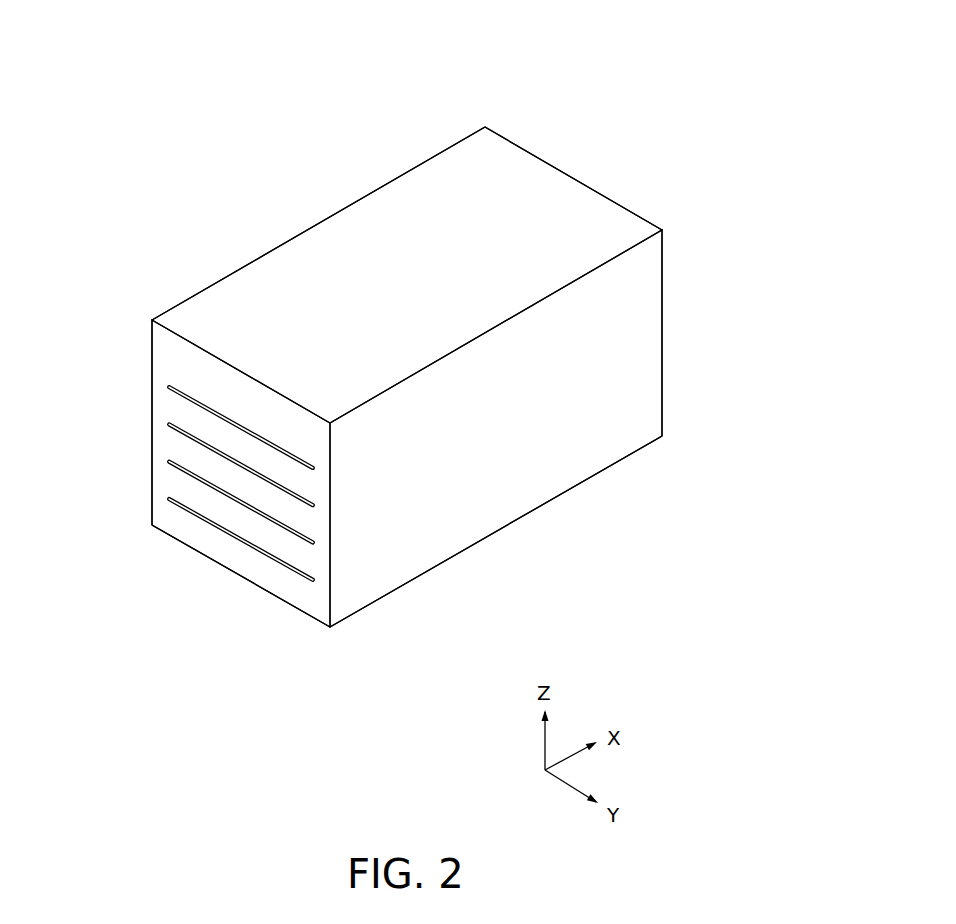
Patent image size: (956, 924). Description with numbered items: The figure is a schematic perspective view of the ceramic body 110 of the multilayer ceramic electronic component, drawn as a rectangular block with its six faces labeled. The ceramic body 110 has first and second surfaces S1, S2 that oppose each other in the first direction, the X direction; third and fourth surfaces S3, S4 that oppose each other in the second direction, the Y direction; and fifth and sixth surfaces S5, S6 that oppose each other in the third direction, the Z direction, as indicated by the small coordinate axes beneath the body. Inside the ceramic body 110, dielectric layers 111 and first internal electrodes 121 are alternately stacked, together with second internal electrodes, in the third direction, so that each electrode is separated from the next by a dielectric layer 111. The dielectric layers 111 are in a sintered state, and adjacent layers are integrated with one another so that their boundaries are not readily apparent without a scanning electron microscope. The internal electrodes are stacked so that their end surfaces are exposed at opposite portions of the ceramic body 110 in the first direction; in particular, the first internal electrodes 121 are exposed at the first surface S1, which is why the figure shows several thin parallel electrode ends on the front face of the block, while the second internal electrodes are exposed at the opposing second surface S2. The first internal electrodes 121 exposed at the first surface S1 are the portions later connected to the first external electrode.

The ceramic body 110 is at (167, 41).
The dielectric layer 111 is at (160, 458).
The first internal electrode 121 is at (187, 398).
The first surface S1 is at (232, 497).
The second surface S2 is at (573, 225).
The third surface S3 is at (622, 362).
The fourth surface S4 is at (268, 297).
The fifth surface S5 is at (412, 215).
The sixth surface S6 is at (455, 505).